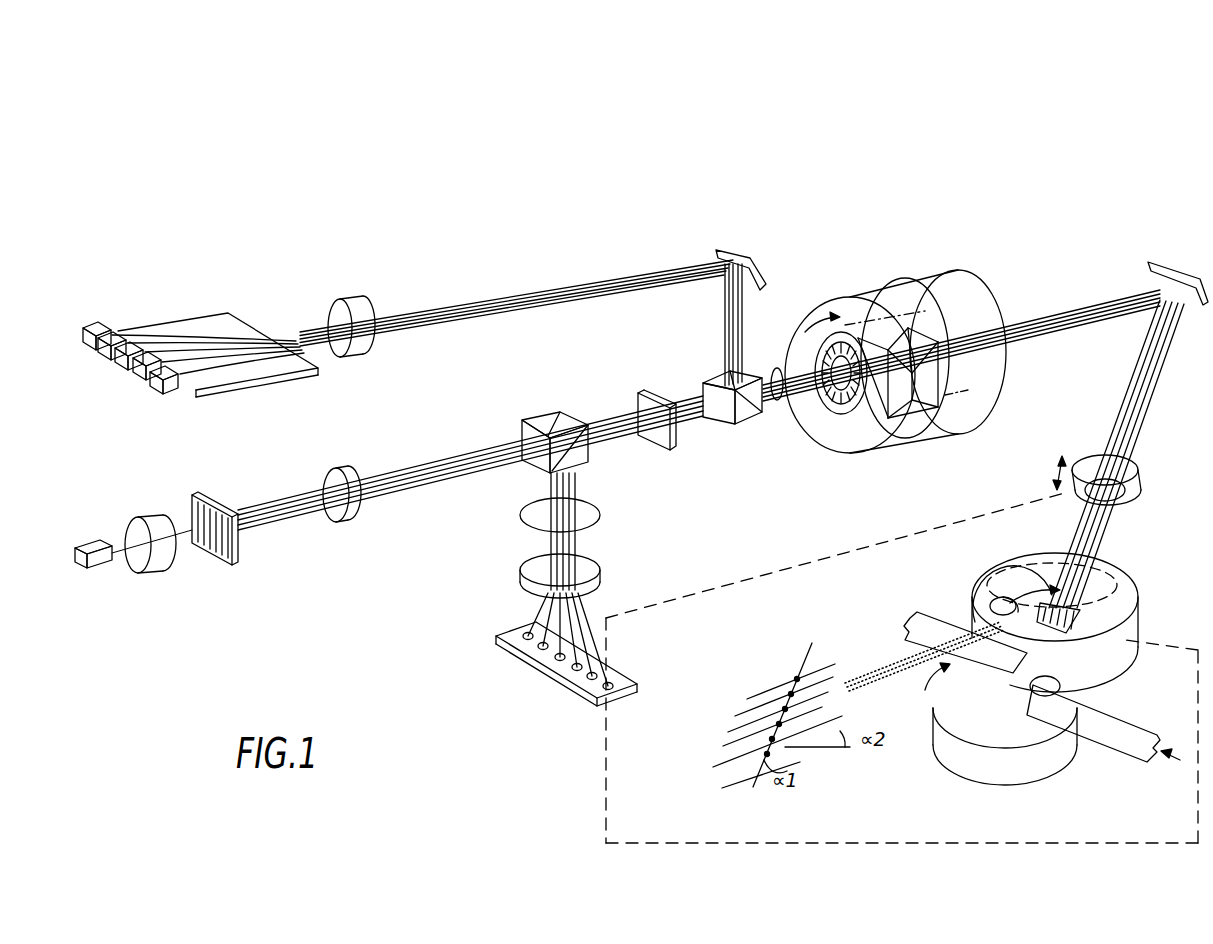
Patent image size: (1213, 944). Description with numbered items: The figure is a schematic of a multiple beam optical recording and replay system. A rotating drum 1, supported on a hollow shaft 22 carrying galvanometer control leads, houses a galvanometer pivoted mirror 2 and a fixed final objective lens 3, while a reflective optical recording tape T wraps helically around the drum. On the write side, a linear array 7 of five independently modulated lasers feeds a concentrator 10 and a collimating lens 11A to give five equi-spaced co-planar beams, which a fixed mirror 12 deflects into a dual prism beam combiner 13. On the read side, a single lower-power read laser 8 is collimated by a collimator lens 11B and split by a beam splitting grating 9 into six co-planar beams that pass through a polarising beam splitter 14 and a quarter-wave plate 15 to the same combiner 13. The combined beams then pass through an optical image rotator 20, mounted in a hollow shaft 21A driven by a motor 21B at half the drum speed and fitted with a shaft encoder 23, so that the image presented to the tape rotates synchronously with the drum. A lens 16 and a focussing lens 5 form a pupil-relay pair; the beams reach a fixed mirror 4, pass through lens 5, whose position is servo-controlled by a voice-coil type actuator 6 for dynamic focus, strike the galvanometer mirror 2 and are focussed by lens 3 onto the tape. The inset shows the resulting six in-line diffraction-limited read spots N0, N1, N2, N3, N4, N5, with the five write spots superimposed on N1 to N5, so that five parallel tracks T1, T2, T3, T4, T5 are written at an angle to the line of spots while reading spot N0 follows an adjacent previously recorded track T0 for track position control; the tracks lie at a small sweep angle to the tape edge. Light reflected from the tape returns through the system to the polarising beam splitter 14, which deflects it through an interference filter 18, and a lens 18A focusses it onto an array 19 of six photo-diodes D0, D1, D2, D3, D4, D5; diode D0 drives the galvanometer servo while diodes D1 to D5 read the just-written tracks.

The rotating drum 1 is at (1120, 584).
The galvanometer pivoted mirror 2 is at (1022, 567).
The final objective lens 3 is at (980, 610).
The fixed mirror 4 is at (1176, 263).
The focussing lens 5 is at (1137, 478).
The voice-coil type actuator 6 is at (1125, 505).
The linear array of lasers 7 is at (125, 368).
The read laser 8 is at (98, 565).
The beam splitting grating 9 is at (233, 542).
The concentrator 10 is at (188, 327).
The collimating lens 11A is at (362, 300).
The collimator lens 11B is at (151, 519).
The fixed mirror 12 is at (733, 249).
The dual prism beam combiner 13 is at (700, 380).
The polarising beam splitter 14 is at (520, 431).
The quarter-wave plate 15 is at (658, 443).
The lens 16 is at (775, 373).
The interference filter 18 is at (588, 522).
The lens 18A is at (528, 571).
The photo-diode array 19 is at (587, 692).
The optical image rotator 20 is at (898, 335).
The hollow shaft 21A is at (977, 314).
The motor 21B is at (923, 310).
The hollow shaft 22 is at (1005, 765).
The shaft encoder 23 is at (835, 408).
The optical recording tape T is at (1128, 727).
The previously recorded track T0 is at (833, 727).
The track T1 is at (777, 738).
The track T2 is at (787, 720).
The track T3 is at (792, 705).
The track T4 is at (797, 689).
The track T5 is at (804, 671).
The reading spot N0 is at (763, 755).
The spot N1 is at (768, 739).
The spot N2 is at (775, 722).
The spot N3 is at (781, 707).
The spot N4 is at (788, 691).
The spot N5 is at (793, 676).
The photo-diode D0 is at (603, 692).
The photo-diode D1 is at (586, 680).
The photo-diode D2 is at (570, 670).
The photo-diode D3 is at (553, 660).
The photo-diode D4 is at (536, 649).
The photo-diode D5 is at (520, 639).